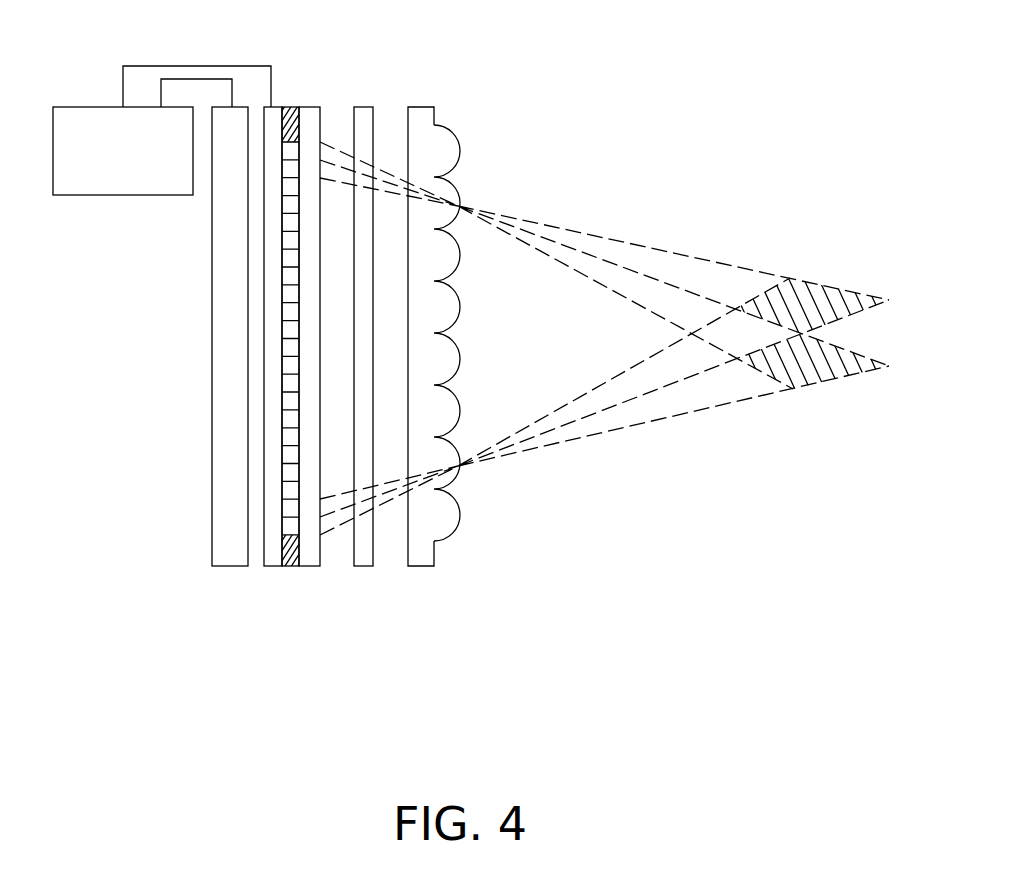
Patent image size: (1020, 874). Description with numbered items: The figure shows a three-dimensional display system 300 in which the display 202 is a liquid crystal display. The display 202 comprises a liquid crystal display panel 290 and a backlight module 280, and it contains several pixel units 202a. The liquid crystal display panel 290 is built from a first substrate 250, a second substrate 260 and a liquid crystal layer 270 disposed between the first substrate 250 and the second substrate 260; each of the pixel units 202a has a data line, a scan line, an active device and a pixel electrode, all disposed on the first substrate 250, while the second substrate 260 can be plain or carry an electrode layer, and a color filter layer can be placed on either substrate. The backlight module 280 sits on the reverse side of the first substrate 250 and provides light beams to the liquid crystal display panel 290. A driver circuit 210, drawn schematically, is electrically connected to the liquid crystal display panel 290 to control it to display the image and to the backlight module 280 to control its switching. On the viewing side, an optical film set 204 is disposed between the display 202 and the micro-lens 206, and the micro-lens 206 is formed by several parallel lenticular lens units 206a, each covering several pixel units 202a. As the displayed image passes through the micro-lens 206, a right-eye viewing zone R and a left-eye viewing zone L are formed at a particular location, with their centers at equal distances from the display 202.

The three-dimensional display system 300 is at (702, 85).
The driver circuit 210 is at (104, 197).
The display 202 is at (276, 384).
The pixel units 202a is at (291, 158).
The backlight module 280 is at (230, 554).
The liquid crystal display panel 290 is at (296, 364).
The first substrate 250 is at (274, 556).
The liquid crystal layer 270 is at (310, 344).
The second substrate 260 is at (310, 556).
The optical film set 204 is at (361, 113).
The micro-lens 206 is at (478, 304).
The lens units 206a is at (452, 148).
The right-eye viewing zone R is at (820, 297).
The left-eye viewing zone L is at (807, 378).